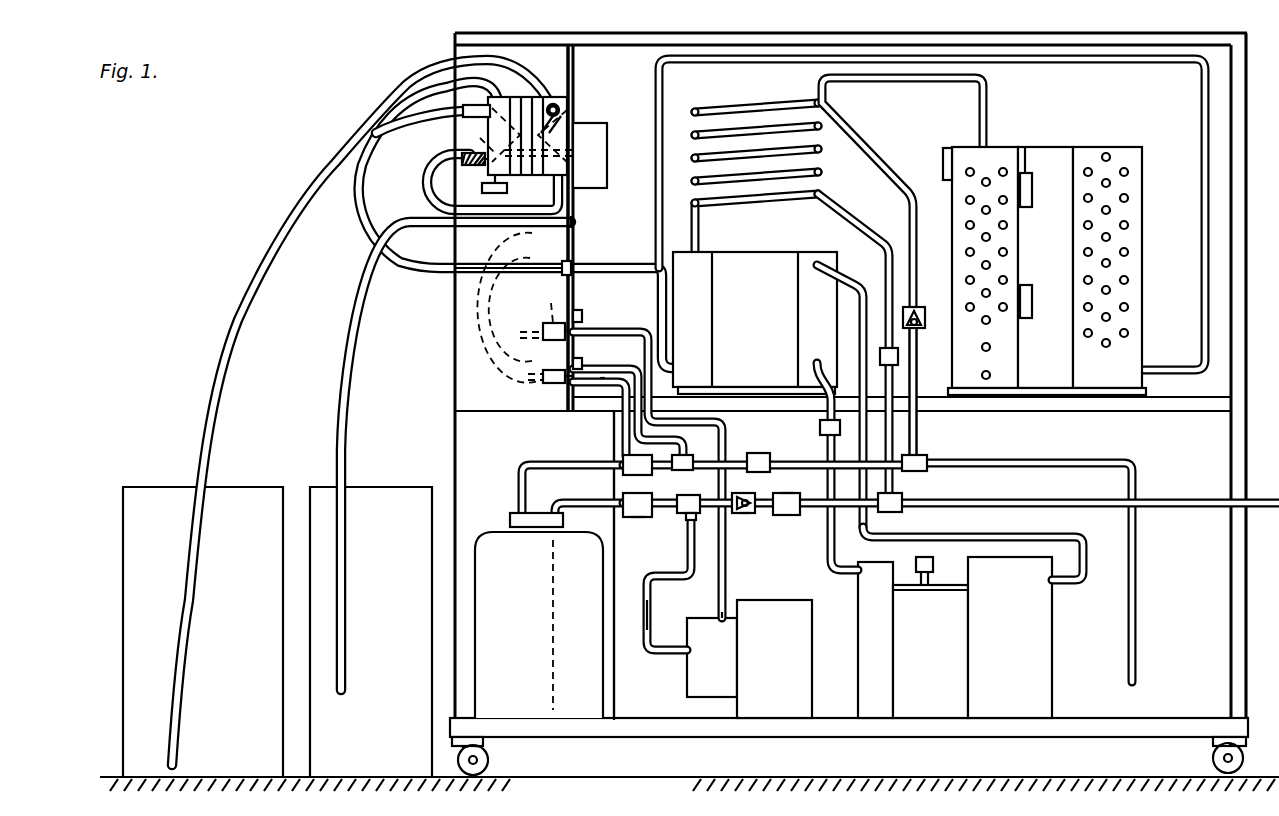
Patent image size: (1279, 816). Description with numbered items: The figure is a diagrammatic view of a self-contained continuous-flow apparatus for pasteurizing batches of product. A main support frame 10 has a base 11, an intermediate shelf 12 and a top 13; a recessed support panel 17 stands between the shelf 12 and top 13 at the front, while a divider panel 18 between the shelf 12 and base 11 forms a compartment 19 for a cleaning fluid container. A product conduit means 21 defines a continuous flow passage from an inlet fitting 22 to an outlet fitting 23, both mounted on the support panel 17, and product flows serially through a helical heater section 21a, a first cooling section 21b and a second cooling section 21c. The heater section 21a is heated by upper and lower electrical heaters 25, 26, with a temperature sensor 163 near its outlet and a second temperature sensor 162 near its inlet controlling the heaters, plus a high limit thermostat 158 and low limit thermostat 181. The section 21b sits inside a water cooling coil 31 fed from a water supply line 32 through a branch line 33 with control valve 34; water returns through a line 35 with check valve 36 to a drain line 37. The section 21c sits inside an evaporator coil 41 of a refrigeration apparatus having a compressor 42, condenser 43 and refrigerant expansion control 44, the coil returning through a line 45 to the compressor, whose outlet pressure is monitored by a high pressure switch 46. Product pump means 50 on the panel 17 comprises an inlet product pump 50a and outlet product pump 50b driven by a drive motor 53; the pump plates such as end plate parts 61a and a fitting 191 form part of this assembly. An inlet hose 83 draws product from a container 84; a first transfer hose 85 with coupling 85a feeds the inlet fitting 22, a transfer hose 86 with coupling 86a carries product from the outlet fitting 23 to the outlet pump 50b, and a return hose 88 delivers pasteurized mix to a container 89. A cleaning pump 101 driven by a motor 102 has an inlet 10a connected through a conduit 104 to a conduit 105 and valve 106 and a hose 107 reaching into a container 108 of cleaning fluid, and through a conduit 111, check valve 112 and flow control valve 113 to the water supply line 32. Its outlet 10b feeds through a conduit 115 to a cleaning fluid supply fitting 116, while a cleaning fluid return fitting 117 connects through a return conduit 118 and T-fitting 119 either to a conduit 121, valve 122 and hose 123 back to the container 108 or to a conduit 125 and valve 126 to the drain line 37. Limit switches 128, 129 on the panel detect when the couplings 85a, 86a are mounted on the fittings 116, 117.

The main support frame 10 is at (1257, 406).
The base 11 is at (1140, 718).
The intermediate shelf 12 is at (1167, 412).
The top 13 is at (1092, 40).
The support panel 17 is at (577, 77).
The divider panel 18 is at (627, 595).
The compartment 19 is at (455, 448).
The product conduit means 21 is at (1001, 72).
The heater section 21a is at (1053, 249).
The first cooling section 21b is at (697, 108).
The second cooling section 21c is at (700, 294).
The inlet fitting 22 is at (574, 228).
The outlet fitting 23 is at (575, 267).
The upper electrical heater 25 is at (1128, 172).
The lower electrical heater 26 is at (1128, 280).
The water cooling coil 31 is at (757, 163).
The water supply line 32 is at (1160, 499).
The branch line 33 is at (888, 249).
The control valve 34 is at (898, 358).
The line 35 is at (848, 127).
The check valve 36 is at (922, 309).
The drain line 37 is at (1040, 462).
The evaporator coil 41 is at (812, 340).
The compressor 42 is at (1040, 631).
The condenser 43 is at (878, 619).
The refrigerant expansion control 44 is at (822, 431).
The line 45 is at (975, 538).
The high pressure switch 46 is at (933, 566).
The product pump means 50 is at (501, 128).
The inlet product pump 50a is at (516, 103).
The outlet product pump 50b is at (537, 176).
The drive motor 53 is at (607, 168).
The passage 61a is at (478, 134).
The inlet hose 83 is at (232, 378).
The container 84 is at (123, 492).
The first transfer hose 85 is at (424, 184).
The coupling 85a is at (462, 153).
The transfer hose 86 is at (362, 216).
The coupling 86a is at (561, 106).
The return hose 88 is at (337, 400).
The container 89 is at (310, 492).
The cleaning pump 101 is at (702, 668).
The motor 102 is at (795, 660).
The conduit 104 is at (657, 583).
The conduit 105 is at (661, 497).
The valve 106 is at (637, 519).
The hose 107 is at (597, 485).
The container 108 is at (478, 634).
The inlet 10a is at (690, 632).
The outlet 10b is at (740, 606).
The conduit 111 is at (735, 497).
The check valve 112 is at (752, 513).
The flow control valve 113 is at (790, 515).
The conduit 115 is at (597, 328).
The cleaning fluid supply fitting 116 is at (543, 340).
The cleaning fluid return fitting 117 is at (560, 385).
The return conduit 118 is at (600, 379).
The T-fitting 119 is at (686, 456).
The conduit 121 is at (660, 481).
The valve 122 is at (624, 461).
The hose 123 is at (538, 461).
The conduit 125 is at (751, 455).
The valve 126 is at (788, 493).
The limit switch 128 is at (578, 311).
The limit switch 129 is at (582, 359).
The high limit thermostat 158 is at (942, 158).
The second temperature sensor 162 is at (1025, 318).
The temperature sensor 163 is at (1025, 207).
The low limit thermostat 181 is at (1032, 163).
The fitting 191 is at (482, 188).